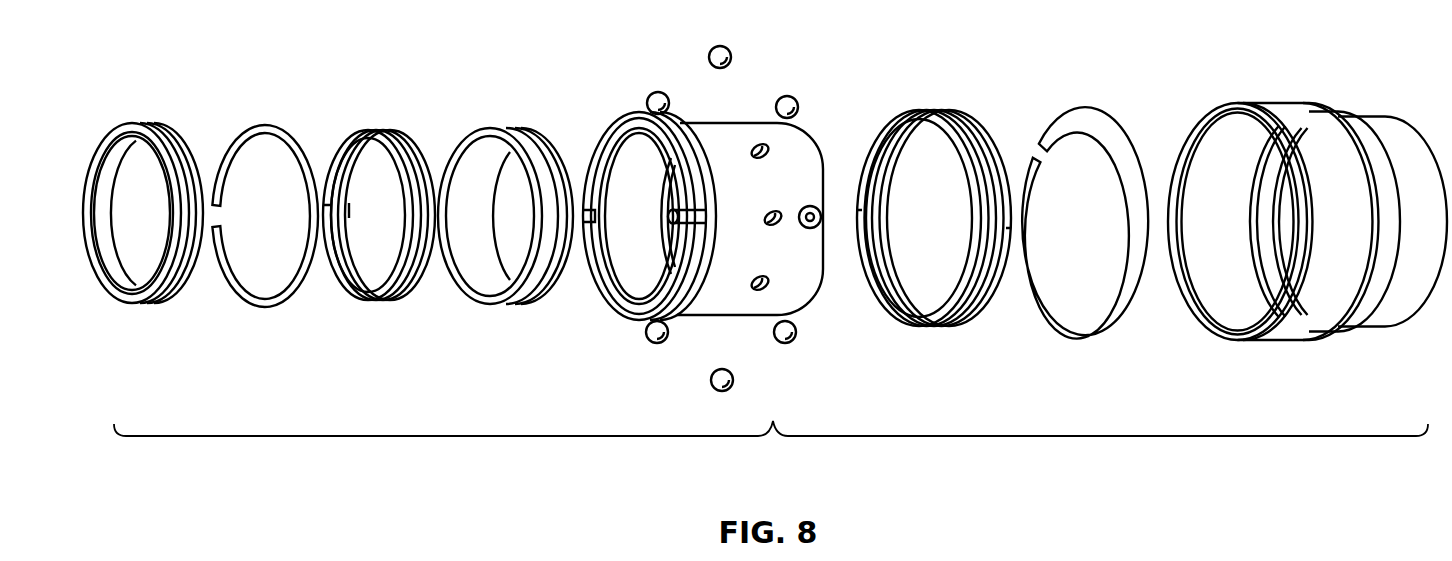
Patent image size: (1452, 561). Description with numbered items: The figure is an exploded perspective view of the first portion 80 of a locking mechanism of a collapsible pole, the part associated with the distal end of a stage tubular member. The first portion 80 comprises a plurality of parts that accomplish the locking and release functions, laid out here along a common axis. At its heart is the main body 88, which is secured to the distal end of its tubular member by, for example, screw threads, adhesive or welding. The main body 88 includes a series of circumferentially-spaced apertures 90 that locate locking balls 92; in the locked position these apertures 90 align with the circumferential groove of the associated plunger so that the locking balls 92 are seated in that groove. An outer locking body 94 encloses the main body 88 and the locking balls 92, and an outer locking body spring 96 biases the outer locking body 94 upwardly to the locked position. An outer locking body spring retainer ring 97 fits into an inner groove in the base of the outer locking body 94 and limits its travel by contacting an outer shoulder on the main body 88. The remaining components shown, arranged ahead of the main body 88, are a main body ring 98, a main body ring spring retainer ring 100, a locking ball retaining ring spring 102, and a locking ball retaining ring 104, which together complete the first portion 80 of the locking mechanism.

The first portion 80 is at (771, 450).
The main body 88 is at (793, 150).
The apertures 90 is at (757, 143).
The locking balls 92 is at (716, 46).
The outer locking body 94 is at (1323, 125).
The outer locking body spring 96 is at (947, 112).
The outer locking body spring retainer ring 97 is at (1090, 112).
The main body ring 98 is at (142, 122).
The main body ring spring retainer ring 100 is at (263, 122).
The locking ball retaining ring spring 102 is at (383, 130).
The locking ball retaining ring 104 is at (508, 130).